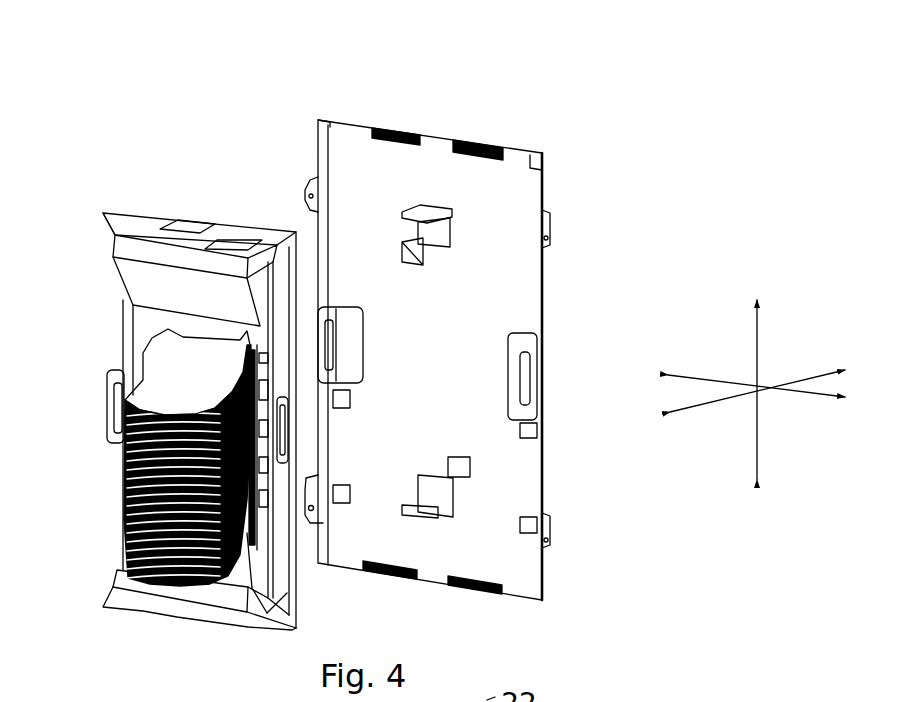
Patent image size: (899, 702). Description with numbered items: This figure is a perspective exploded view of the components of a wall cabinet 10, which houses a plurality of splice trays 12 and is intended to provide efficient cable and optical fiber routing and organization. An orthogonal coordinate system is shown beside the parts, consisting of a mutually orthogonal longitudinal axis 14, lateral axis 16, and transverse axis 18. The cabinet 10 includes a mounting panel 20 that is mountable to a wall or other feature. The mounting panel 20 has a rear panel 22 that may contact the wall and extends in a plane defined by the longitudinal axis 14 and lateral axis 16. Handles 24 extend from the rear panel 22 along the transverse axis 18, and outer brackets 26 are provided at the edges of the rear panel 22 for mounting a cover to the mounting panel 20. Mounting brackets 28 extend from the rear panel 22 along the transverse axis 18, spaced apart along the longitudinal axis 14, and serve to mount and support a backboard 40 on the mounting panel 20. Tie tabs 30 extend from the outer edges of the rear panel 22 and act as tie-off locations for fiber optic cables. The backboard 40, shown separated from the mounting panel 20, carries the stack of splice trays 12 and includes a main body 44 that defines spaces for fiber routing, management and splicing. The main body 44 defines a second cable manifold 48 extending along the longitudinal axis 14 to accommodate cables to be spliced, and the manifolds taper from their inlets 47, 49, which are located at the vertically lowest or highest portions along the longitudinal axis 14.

The wall cabinet 10 is at (720, 100).
The splice trays 12 is at (122, 488).
The longitudinal axis 14 is at (760, 347).
The lateral axis 16 is at (792, 398).
The transverse axis 18 is at (800, 378).
The mounting panel 20 is at (585, 128).
The rear panel 22 is at (472, 175).
The handles 24 is at (528, 348).
The outer brackets 26 is at (548, 230).
The mounting brackets 28 is at (428, 207).
The tie tabs 30 is at (380, 130).
The backboard 40 is at (103, 260).
The main body 44 is at (133, 283).
The inlet 47 is at (157, 233).
The second cable manifold 48 is at (250, 572).
The inlet 49 is at (237, 248).